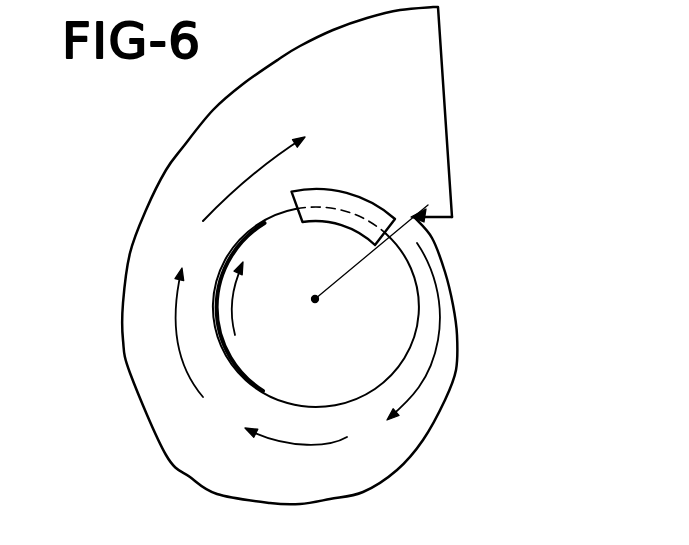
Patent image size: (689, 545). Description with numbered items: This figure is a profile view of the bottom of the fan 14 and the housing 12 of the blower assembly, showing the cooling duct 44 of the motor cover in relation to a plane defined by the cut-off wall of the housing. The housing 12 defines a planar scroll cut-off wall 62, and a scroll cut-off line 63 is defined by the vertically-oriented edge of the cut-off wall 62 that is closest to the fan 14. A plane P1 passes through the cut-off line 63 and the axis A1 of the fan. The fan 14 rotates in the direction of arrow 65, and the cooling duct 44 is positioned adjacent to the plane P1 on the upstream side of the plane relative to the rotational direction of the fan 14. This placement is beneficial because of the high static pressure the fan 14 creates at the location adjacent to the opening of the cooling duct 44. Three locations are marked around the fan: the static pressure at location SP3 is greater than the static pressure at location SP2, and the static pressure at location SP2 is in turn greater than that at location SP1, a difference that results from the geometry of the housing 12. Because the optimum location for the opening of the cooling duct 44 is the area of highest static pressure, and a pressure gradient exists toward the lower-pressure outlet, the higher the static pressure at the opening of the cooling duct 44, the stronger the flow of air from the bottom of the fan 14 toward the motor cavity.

The housing 12 is at (458, 377).
The fan 14 is at (420, 298).
The cooling duct 44 is at (358, 186).
The scroll cut-off wall 62 is at (447, 217).
The scroll cut-off line 63 is at (413, 213).
The arrow 65 is at (247, 302).
The axis A1 is at (321, 299).
The plane P1 is at (313, 302).
The location SP1 is at (331, 440).
The location SP2 is at (270, 424).
The location SP3 is at (234, 267).